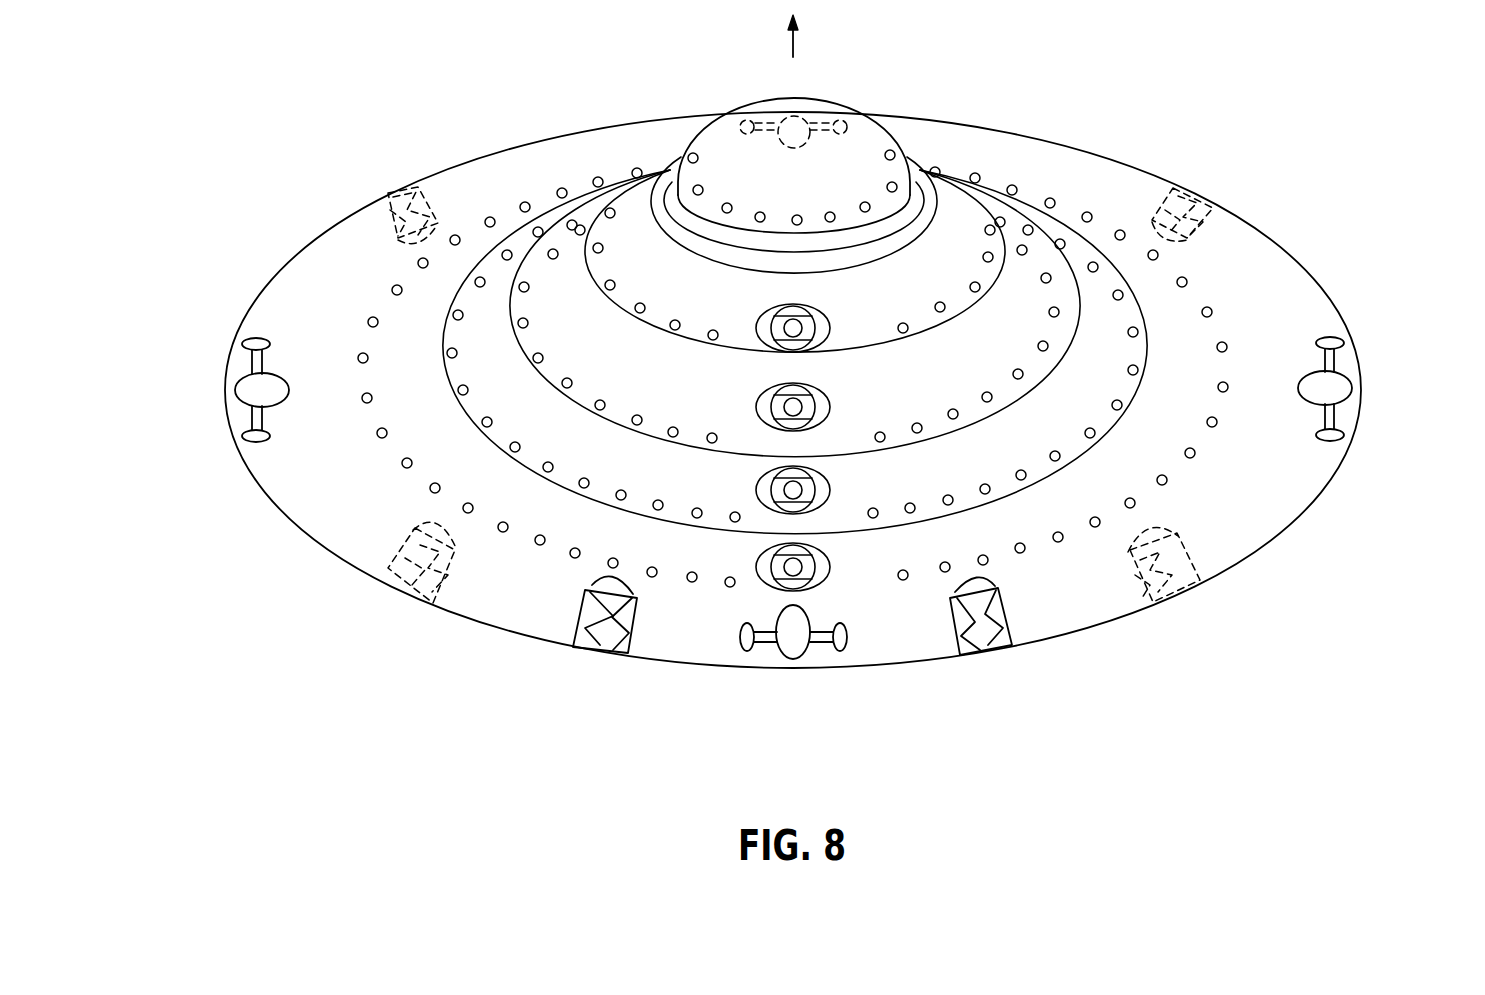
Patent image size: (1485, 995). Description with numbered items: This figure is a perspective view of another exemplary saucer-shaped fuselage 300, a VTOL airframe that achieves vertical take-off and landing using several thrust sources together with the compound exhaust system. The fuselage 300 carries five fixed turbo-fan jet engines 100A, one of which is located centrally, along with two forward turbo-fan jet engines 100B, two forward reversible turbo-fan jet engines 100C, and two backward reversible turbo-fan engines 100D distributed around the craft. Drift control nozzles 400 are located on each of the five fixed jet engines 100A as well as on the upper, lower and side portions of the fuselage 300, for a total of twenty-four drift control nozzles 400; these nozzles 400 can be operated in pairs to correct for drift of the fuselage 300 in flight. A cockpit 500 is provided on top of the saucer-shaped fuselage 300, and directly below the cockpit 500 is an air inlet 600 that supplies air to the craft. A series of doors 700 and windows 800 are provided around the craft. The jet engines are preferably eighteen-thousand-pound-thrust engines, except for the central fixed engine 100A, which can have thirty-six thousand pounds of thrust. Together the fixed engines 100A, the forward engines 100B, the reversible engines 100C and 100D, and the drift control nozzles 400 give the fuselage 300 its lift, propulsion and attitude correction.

The fuselage 300 is at (1300, 190).
The drift control nozzles 400 is at (743, 118).
The cockpit 500 is at (883, 117).
The air inlet 600 is at (881, 221).
The doors 700 is at (803, 405).
The windows 800 is at (690, 155).
The fixed turbo-fanjet engines 100A is at (802, 113).
The forward turbo-fan jet engines 100B is at (585, 650).
The forward reversible turbo-fan jet engines 100C is at (385, 570).
The backward reversible turbo-fan engines 100D is at (393, 192).